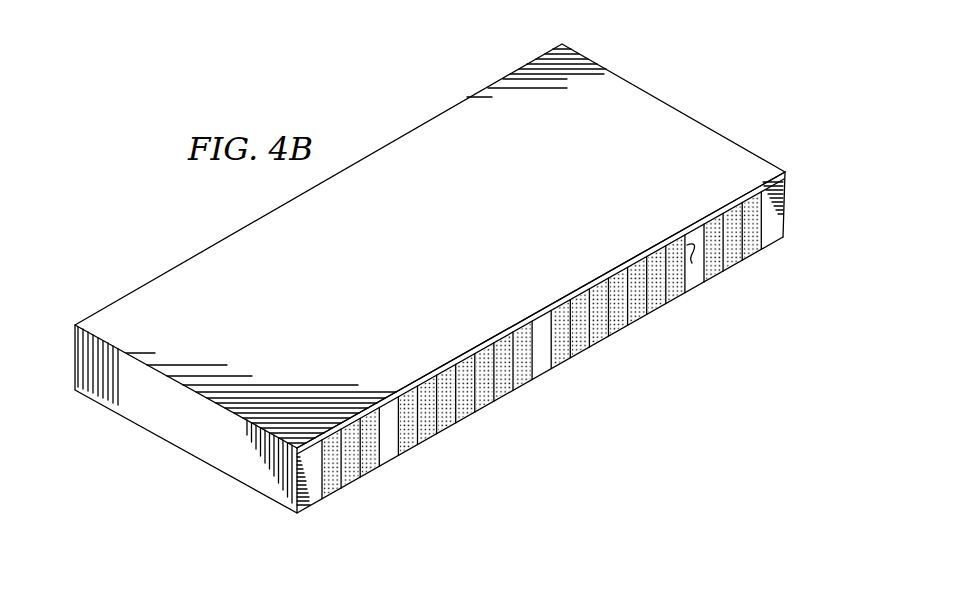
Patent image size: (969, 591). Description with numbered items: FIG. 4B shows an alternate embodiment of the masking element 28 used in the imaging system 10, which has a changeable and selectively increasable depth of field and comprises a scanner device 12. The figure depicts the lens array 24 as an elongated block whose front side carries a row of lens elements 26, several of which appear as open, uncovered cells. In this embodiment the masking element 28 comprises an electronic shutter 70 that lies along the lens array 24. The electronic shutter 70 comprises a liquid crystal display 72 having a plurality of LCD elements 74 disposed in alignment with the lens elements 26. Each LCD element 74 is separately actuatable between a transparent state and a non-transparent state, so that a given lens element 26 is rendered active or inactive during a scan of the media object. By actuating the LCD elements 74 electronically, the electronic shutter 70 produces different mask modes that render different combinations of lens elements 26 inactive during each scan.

The imaging system 10 is at (762, 60).
The scanner device 12 is at (128, 437).
The lens array 24 is at (197, 443).
The lens elements 26 is at (385, 420).
The masking element 28 is at (370, 481).
The electronic shutter 70 is at (507, 399).
The liquid crystal display 72 is at (482, 339).
The LCD elements 74 is at (659, 302).